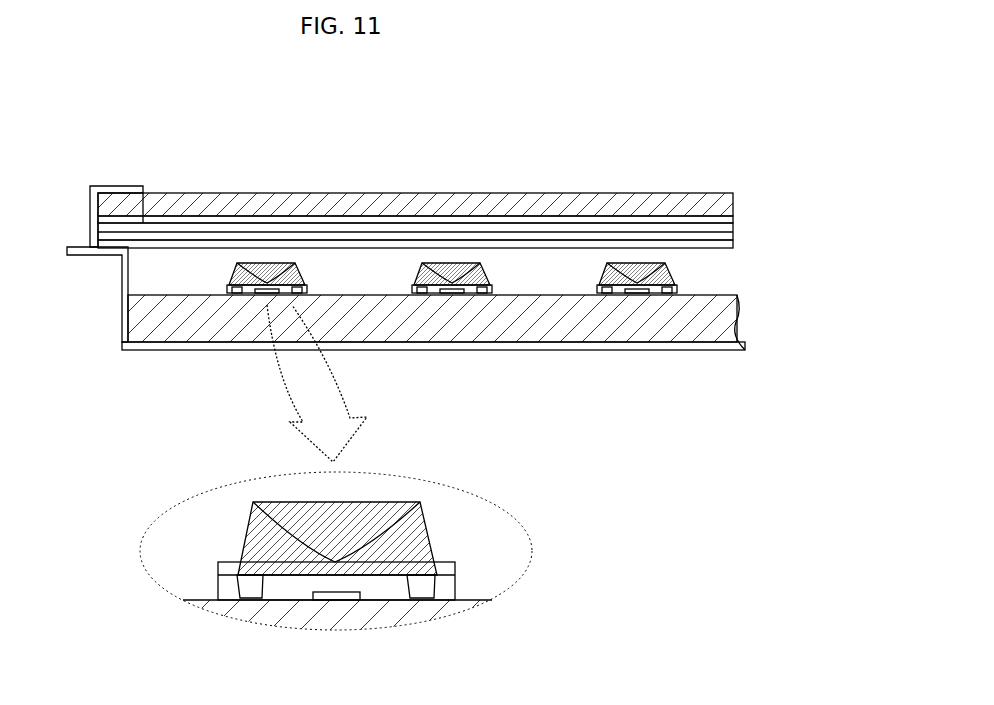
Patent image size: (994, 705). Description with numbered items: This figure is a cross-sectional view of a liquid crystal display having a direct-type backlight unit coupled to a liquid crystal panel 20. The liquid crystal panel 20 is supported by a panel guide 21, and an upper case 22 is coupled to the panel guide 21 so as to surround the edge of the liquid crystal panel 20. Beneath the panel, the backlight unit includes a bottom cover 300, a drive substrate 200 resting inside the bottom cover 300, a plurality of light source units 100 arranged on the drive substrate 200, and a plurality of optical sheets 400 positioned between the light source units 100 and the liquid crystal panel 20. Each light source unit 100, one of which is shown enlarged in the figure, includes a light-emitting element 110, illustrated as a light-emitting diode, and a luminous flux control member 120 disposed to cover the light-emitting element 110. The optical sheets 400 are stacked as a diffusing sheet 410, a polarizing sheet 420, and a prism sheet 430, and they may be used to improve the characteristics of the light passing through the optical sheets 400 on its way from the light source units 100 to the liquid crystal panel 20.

The liquid crystal panel 20 is at (250, 190).
The panel guide 21 is at (88, 229).
The upper case 22 is at (88, 196).
The light source unit 100 is at (410, 562).
The light-emitting element 110 is at (360, 590).
The luminous flux control member 120 is at (432, 530).
The drive substrate 200 is at (525, 327).
The bottom cover 300 is at (627, 351).
The optical sheets 400 is at (415, 164).
The diffusing sheet 410 is at (485, 112).
The polarizing sheet 420 is at (560, 230).
The prism sheet 430 is at (495, 217).